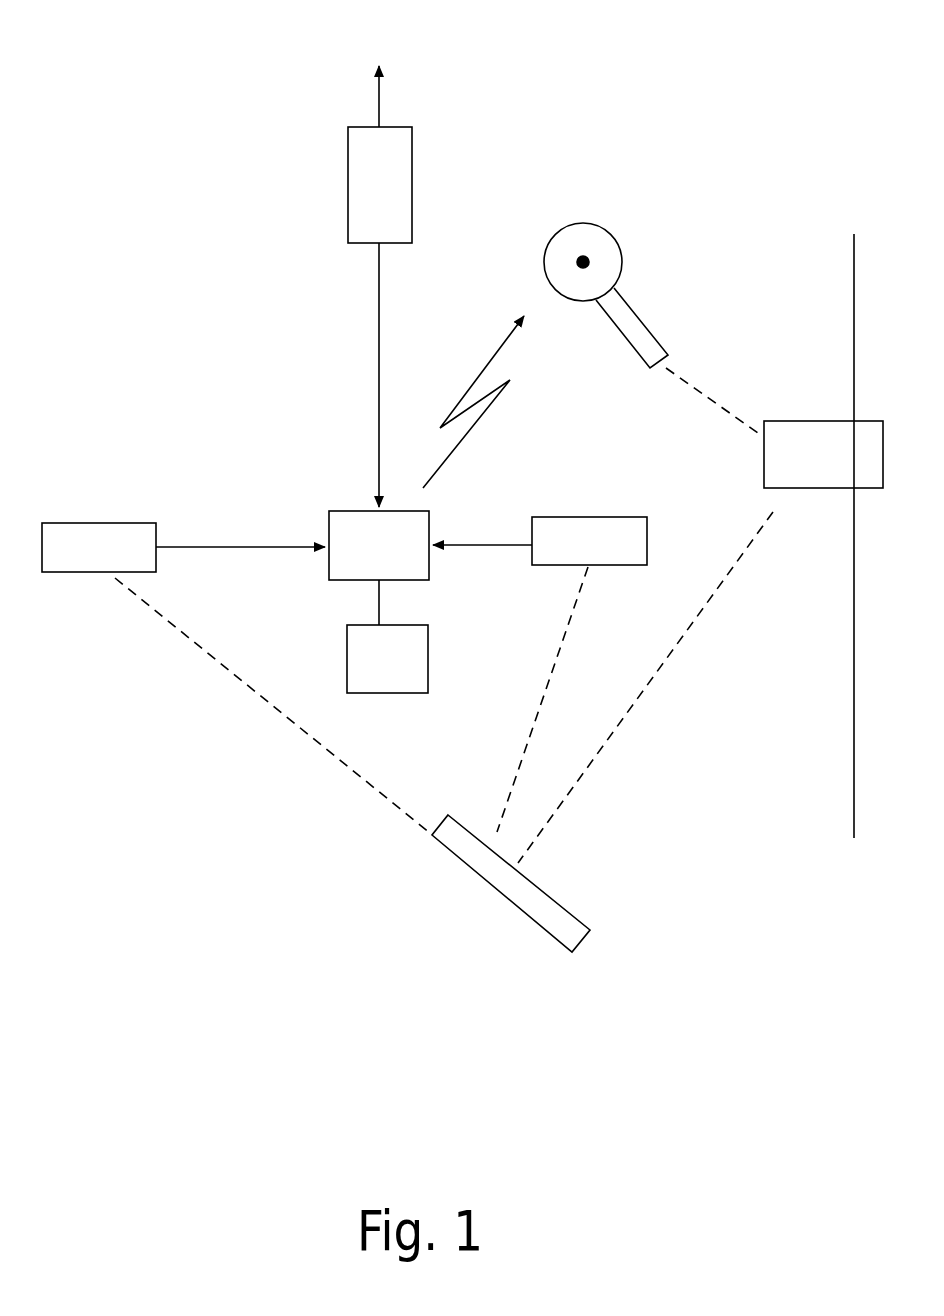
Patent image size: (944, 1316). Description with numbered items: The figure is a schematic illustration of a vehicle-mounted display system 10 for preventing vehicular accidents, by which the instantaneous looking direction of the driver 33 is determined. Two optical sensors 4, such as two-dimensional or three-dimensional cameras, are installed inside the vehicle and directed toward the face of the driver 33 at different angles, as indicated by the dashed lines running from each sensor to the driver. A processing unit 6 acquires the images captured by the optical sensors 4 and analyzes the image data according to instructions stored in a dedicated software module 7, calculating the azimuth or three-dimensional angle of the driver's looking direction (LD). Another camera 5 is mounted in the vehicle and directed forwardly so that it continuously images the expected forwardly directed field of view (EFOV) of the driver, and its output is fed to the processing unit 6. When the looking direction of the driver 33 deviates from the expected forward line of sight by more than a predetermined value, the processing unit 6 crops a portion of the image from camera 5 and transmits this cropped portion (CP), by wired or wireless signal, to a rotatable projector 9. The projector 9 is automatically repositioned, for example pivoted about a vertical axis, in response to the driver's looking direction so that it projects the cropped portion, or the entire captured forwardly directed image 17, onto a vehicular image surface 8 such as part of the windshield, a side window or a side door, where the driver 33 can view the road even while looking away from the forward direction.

The display system 10 is at (190, 84).
The camera 5 is at (368, 163).
The processing unit 6 is at (330, 508).
The software module 7 is at (350, 655).
The optical sensor 4 is at (77, 543).
The rotatable projector 9 is at (618, 244).
The captured forwardly directed image 17 is at (782, 420).
The vehicular image surface 8 is at (854, 786).
The driver 33 is at (552, 912).